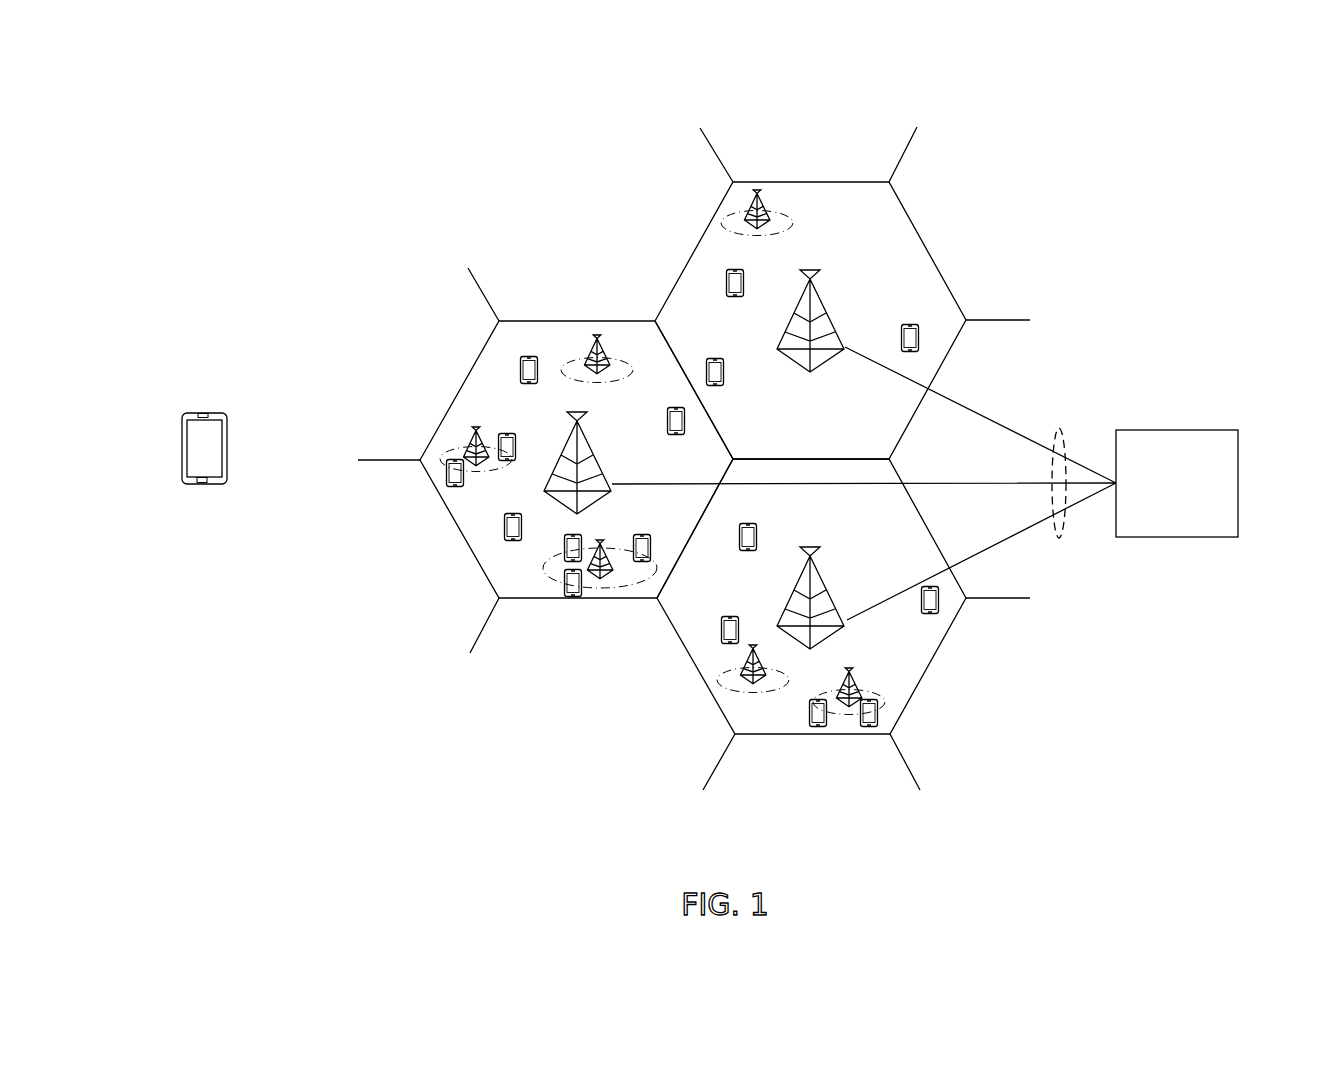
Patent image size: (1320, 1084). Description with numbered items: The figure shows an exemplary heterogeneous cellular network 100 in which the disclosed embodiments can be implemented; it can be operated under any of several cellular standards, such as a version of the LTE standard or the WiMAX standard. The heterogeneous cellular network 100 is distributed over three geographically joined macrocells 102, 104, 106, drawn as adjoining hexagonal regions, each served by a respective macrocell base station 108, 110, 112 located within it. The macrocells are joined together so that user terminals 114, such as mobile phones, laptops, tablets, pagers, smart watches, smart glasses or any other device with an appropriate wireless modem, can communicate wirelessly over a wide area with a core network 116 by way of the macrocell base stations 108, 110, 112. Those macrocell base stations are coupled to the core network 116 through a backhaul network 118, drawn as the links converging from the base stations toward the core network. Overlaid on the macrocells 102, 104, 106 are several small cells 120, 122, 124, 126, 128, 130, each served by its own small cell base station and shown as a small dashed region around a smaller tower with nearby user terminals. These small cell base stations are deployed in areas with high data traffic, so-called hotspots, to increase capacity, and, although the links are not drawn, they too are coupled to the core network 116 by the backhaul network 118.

The heterogeneous cellular network 100 is at (293, 818).
The macrocell 102 is at (450, 517).
The macrocell 104 is at (935, 660).
The macrocell 106 is at (923, 240).
The macrocell base station 108 is at (610, 462).
The macrocell base station 110 is at (835, 602).
The macrocell base station 112 is at (833, 327).
The user terminal 114 is at (203, 413).
The core network 116 is at (1177, 483).
The backhaul network 118 is at (1055, 428).
The small cell 120 is at (566, 366).
The small cell 122 is at (450, 444).
The small cell 124 is at (602, 588).
The small cell 126 is at (716, 682).
The small cell 128 is at (840, 716).
The small cell 130 is at (721, 222).